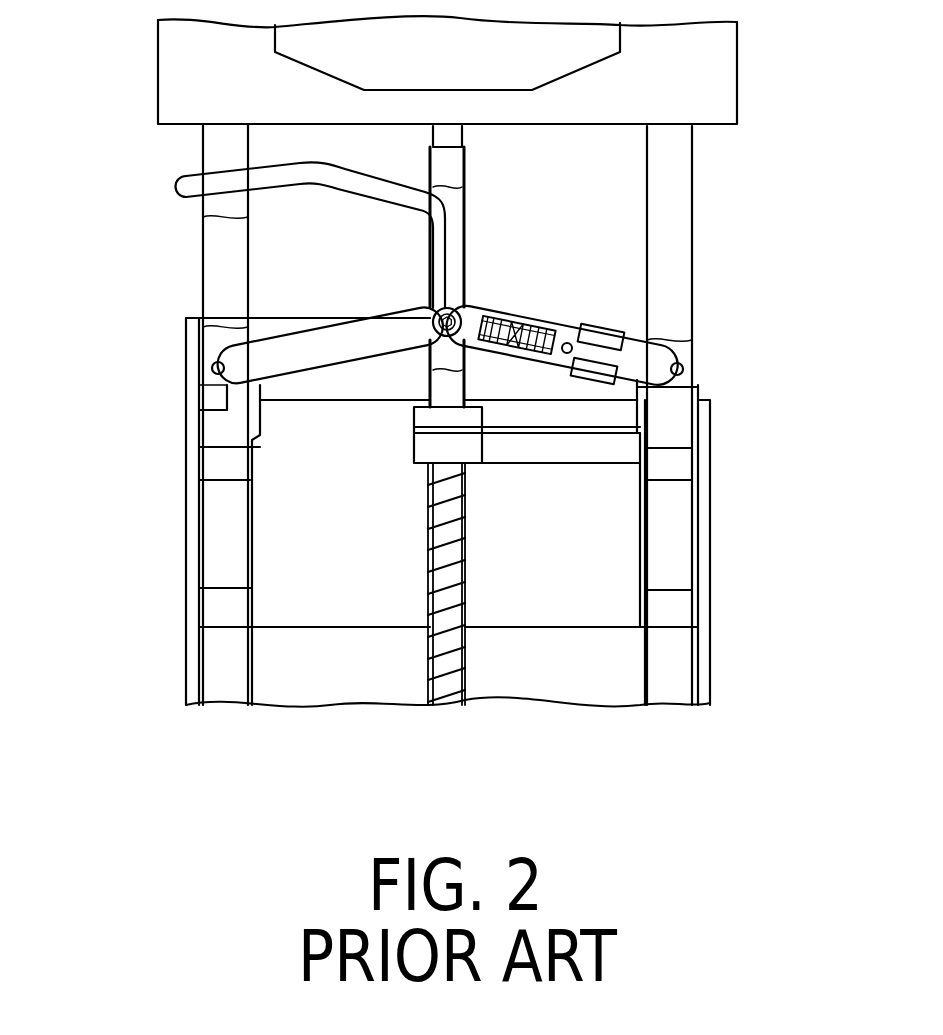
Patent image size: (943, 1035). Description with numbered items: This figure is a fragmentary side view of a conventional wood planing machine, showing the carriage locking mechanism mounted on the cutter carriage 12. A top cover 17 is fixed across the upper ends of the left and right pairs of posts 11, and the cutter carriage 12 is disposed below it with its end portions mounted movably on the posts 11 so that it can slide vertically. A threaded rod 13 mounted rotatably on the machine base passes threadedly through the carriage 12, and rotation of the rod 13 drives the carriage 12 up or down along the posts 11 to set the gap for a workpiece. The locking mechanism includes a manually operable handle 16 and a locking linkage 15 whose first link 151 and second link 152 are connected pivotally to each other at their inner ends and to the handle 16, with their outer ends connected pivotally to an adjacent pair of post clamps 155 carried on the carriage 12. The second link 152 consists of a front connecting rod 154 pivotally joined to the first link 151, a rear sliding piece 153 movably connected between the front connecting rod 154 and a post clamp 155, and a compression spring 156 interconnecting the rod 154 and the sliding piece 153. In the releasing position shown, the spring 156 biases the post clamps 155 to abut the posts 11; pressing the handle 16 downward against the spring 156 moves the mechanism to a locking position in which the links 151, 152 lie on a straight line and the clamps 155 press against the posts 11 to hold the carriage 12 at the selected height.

The posts 11 is at (226, 247).
The cutter carriage 12 is at (308, 567).
The threaded rods 13 is at (458, 577).
The locking linkages 15 is at (510, 318).
The manually operable handle 16 is at (343, 187).
The top cover 17 is at (183, 77).
The first link 151 is at (332, 357).
The second link 152 is at (468, 300).
The rear sliding piece 153 is at (645, 350).
The front connecting rod 154 is at (573, 325).
The post clamps 155 is at (240, 398).
The compression spring 156 is at (530, 358).